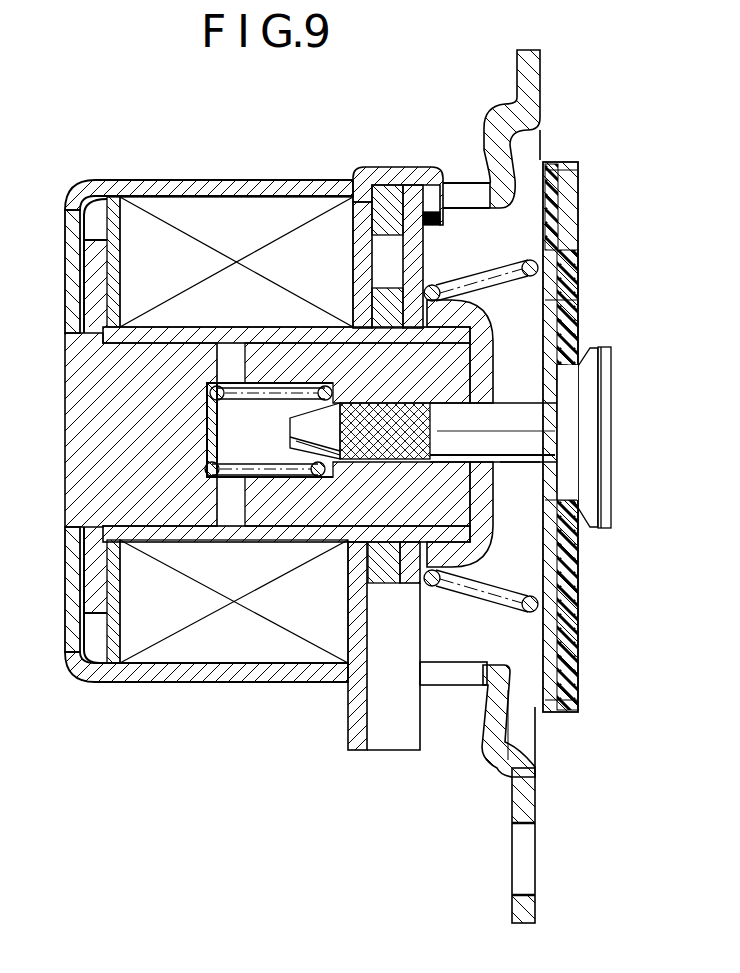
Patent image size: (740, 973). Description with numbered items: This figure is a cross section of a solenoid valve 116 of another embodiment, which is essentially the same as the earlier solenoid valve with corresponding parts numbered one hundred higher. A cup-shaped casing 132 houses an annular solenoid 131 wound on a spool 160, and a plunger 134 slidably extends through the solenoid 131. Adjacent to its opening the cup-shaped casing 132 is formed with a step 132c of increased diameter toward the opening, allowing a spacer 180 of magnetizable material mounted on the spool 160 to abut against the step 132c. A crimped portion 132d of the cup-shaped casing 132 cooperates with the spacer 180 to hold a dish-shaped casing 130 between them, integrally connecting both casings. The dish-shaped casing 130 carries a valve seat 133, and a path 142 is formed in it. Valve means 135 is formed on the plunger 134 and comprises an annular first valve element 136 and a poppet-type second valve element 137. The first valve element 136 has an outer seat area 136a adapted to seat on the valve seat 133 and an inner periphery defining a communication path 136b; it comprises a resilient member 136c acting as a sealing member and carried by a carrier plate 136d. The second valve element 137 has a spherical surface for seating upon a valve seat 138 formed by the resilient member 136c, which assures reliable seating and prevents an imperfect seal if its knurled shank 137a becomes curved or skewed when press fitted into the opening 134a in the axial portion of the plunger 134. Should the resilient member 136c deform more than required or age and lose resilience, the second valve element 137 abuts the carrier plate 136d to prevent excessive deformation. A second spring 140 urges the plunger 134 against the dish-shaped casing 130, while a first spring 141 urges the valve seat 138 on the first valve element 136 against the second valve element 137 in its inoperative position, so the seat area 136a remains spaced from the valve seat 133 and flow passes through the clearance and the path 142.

The solenoid valve 116 is at (227, 684).
The dish-shaped casing 130 is at (500, 772).
The solenoid 131 is at (130, 590).
The cup-shaped casing 132 is at (140, 685).
The step 132c is at (370, 208).
The crimped portion 132d is at (438, 224).
The valve seat 133 is at (530, 690).
The plunger 134 is at (320, 500).
The opening 134a is at (438, 408).
The valve means 135 is at (613, 508).
The first valve element 136 is at (607, 441).
The seat area 136a is at (532, 702).
The communication path 136b is at (568, 500).
The resilient member 136c is at (567, 298).
The carrier plate 136d is at (571, 198).
The second valve element 137 is at (481, 454).
The shank 137a is at (516, 462).
The valve seat 138 is at (580, 358).
The second spring 140 is at (207, 465).
The first spring 141 is at (437, 587).
The path 142 is at (466, 183).
The spool 160 is at (353, 247).
The spacer 180 is at (394, 184).